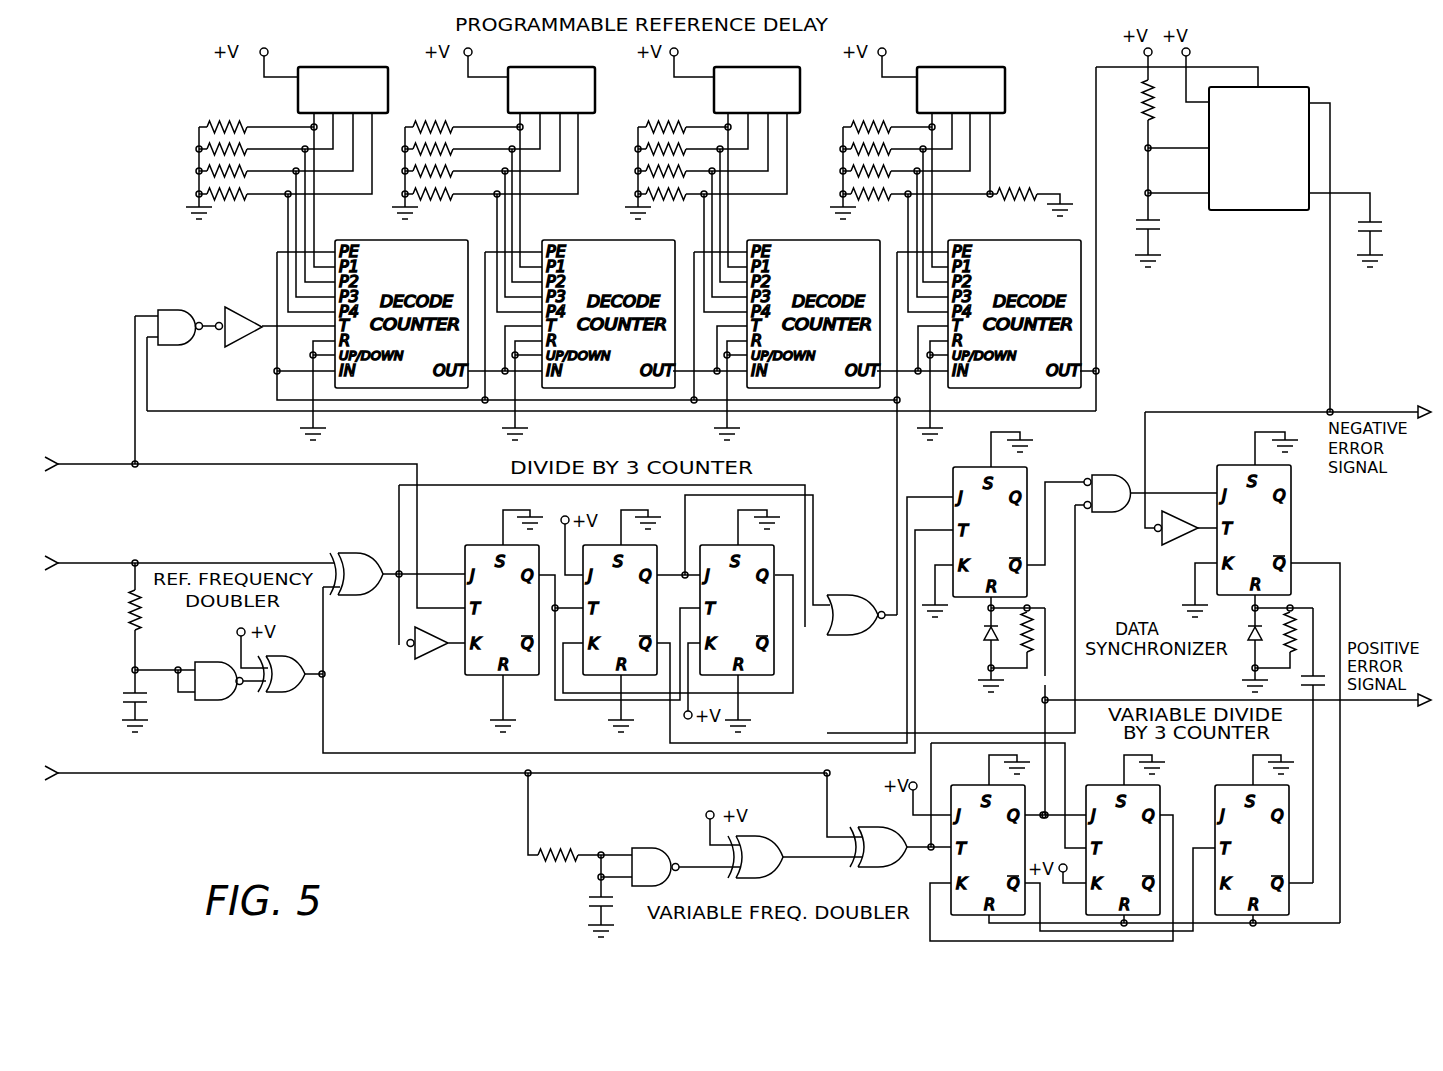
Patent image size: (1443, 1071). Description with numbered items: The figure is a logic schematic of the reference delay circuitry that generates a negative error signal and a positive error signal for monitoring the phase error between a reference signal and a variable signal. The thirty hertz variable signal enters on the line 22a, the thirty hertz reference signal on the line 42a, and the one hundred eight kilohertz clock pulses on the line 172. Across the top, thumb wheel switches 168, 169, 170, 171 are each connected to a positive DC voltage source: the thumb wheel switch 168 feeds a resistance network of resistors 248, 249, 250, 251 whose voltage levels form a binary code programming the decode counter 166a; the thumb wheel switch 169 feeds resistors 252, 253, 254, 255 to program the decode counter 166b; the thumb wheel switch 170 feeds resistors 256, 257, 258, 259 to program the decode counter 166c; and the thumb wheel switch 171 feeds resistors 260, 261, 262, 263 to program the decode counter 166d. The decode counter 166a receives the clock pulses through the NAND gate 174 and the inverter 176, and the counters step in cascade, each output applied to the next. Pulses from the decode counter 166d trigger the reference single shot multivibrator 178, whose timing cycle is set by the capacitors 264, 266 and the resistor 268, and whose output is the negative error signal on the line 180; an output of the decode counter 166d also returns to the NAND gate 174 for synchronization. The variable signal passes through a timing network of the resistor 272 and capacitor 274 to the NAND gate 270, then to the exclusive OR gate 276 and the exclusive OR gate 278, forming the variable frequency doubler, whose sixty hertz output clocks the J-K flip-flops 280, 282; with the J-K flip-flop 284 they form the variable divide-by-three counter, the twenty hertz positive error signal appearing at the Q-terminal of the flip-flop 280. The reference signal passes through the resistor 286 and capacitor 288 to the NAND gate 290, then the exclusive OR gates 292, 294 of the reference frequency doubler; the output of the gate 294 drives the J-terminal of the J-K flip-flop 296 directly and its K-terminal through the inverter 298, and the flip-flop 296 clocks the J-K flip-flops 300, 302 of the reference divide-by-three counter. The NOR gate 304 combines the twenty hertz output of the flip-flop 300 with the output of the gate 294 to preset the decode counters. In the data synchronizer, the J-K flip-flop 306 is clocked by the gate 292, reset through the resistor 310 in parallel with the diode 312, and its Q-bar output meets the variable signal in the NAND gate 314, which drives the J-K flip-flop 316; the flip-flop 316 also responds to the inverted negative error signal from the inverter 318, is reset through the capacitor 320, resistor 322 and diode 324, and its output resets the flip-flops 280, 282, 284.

The thumb wheel switch 168 is at (365, 101).
The thumb wheel switch 169 is at (573, 101).
The thumb wheel switch 170 is at (779, 101).
The thumb wheel switch 171 is at (982, 101).
The resistor 248 is at (229, 123).
The resistor 249 is at (225, 147).
The resistor 250 is at (225, 169).
The resistor 251 is at (225, 192).
The resistor 252 is at (432, 123).
The resistor 253 is at (445, 154).
The resistor 254 is at (445, 175).
The resistor 255 is at (435, 198).
The resistor 256 is at (664, 123).
The resistor 257 is at (650, 148).
The resistor 258 is at (650, 170).
The resistor 259 is at (650, 193).
The resistor 260 is at (868, 124).
The resistor 261 is at (855, 150).
The resistor 262 is at (855, 171).
The resistor 263 is at (855, 193).
The decode counter 166a is at (431, 274).
The decode counter 166b is at (638, 274).
The decode counter 166c is at (843, 274).
The decode counter 166d is at (1044, 274).
The NAND gate 174 is at (173, 312).
The inverter 176 is at (243, 335).
The reference single shot multivibrator 178 is at (1278, 130).
The resistor 268 is at (1142, 103).
The capacitor 264 is at (1160, 228).
The capacitor 266 is at (1358, 228).
The line 172 is at (243, 466).
The line 42a is at (88, 561).
The line 22a is at (220, 773).
The resistor 286 is at (141, 627).
The capacitor 288 is at (121, 698).
The NAND gate 290 is at (213, 702).
The exclusive OR gate 292 is at (279, 693).
The exclusive OR gate 294 is at (353, 562).
The inverter 298 is at (430, 665).
The J-K flip-flop 296 is at (523, 615).
The J-K flip-flop 300 is at (641, 615).
The J-K flip-flop 302 is at (758, 615).
The NOR gate 304 is at (847, 597).
The J-K flip-flop 306 is at (1011, 537).
The resistor 310 is at (1028, 640).
The diode 312 is at (985, 636).
The NAND gate 314 is at (1107, 477).
The inverter 318 is at (1170, 510).
The J-K flip-flop 316 is at (1275, 535).
The resistor 322 is at (1298, 628).
The diode 324 is at (1250, 643).
The capacitor 320 is at (1322, 694).
The line 180 is at (1349, 411).
The NAND gate 270 is at (647, 854).
The resistor 272 is at (558, 850).
The capacitor 274 is at (590, 901).
The exclusive OR gate 276 is at (758, 852).
The exclusive OR gate 278 is at (882, 830).
The J-K flip-flop 280 is at (1009, 855).
The J-K flip-flop 282 is at (1144, 855).
The J-K flip-flop 284 is at (1273, 855).